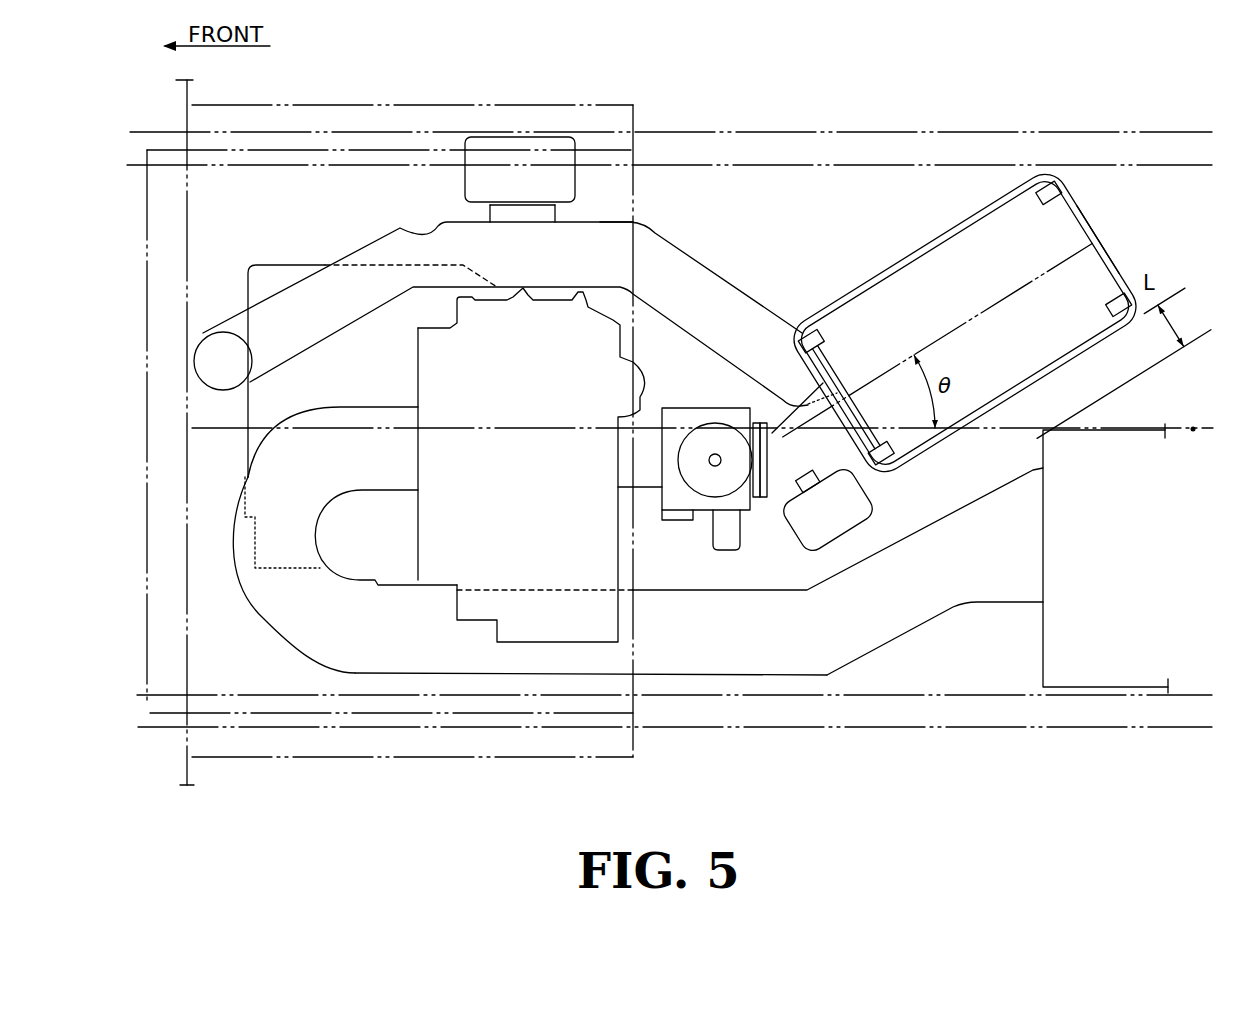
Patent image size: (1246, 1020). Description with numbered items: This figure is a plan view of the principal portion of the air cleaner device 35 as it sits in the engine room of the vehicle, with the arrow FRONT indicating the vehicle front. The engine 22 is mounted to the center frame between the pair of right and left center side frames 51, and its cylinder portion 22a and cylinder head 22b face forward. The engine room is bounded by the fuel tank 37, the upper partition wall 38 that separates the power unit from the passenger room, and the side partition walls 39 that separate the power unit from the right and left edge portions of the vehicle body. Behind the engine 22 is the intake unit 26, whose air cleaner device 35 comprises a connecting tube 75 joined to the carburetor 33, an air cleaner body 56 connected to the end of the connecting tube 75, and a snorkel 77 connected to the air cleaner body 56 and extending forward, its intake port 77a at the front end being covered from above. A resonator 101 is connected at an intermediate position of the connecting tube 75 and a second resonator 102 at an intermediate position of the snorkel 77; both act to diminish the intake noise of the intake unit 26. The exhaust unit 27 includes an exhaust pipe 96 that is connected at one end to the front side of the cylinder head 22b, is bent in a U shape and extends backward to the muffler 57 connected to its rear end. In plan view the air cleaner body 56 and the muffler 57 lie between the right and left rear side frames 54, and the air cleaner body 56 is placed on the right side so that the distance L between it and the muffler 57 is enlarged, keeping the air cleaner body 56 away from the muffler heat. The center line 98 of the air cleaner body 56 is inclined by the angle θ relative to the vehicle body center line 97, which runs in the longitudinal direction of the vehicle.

The engine 22 is at (244, 448).
The cylinder portion 22a is at (407, 351).
The cylinder head 22b is at (417, 373).
The intake unit 26 is at (609, 208).
The exhaust unit 27 is at (855, 676).
The carburetor 33 is at (674, 515).
The air cleaner device 35 is at (925, 218).
The fuel tank 37 is at (190, 770).
The upper partition wall 38 is at (640, 637).
The side partition wall 39 is at (438, 103).
The center side frame 51 is at (340, 130).
The rear side frame 54 is at (833, 130).
The air cleaner body 56 is at (846, 270).
The muffler 57 is at (1098, 688).
The connecting tube 75 is at (868, 460).
The snorkel 77 is at (667, 240).
The intake port 77a is at (202, 320).
The exhaust pipe 96 is at (266, 620).
The vehicle body center line 97 is at (1193, 431).
The center line 98 is at (1116, 229).
The resonator 101 is at (795, 527).
The resonator 102 is at (510, 145).